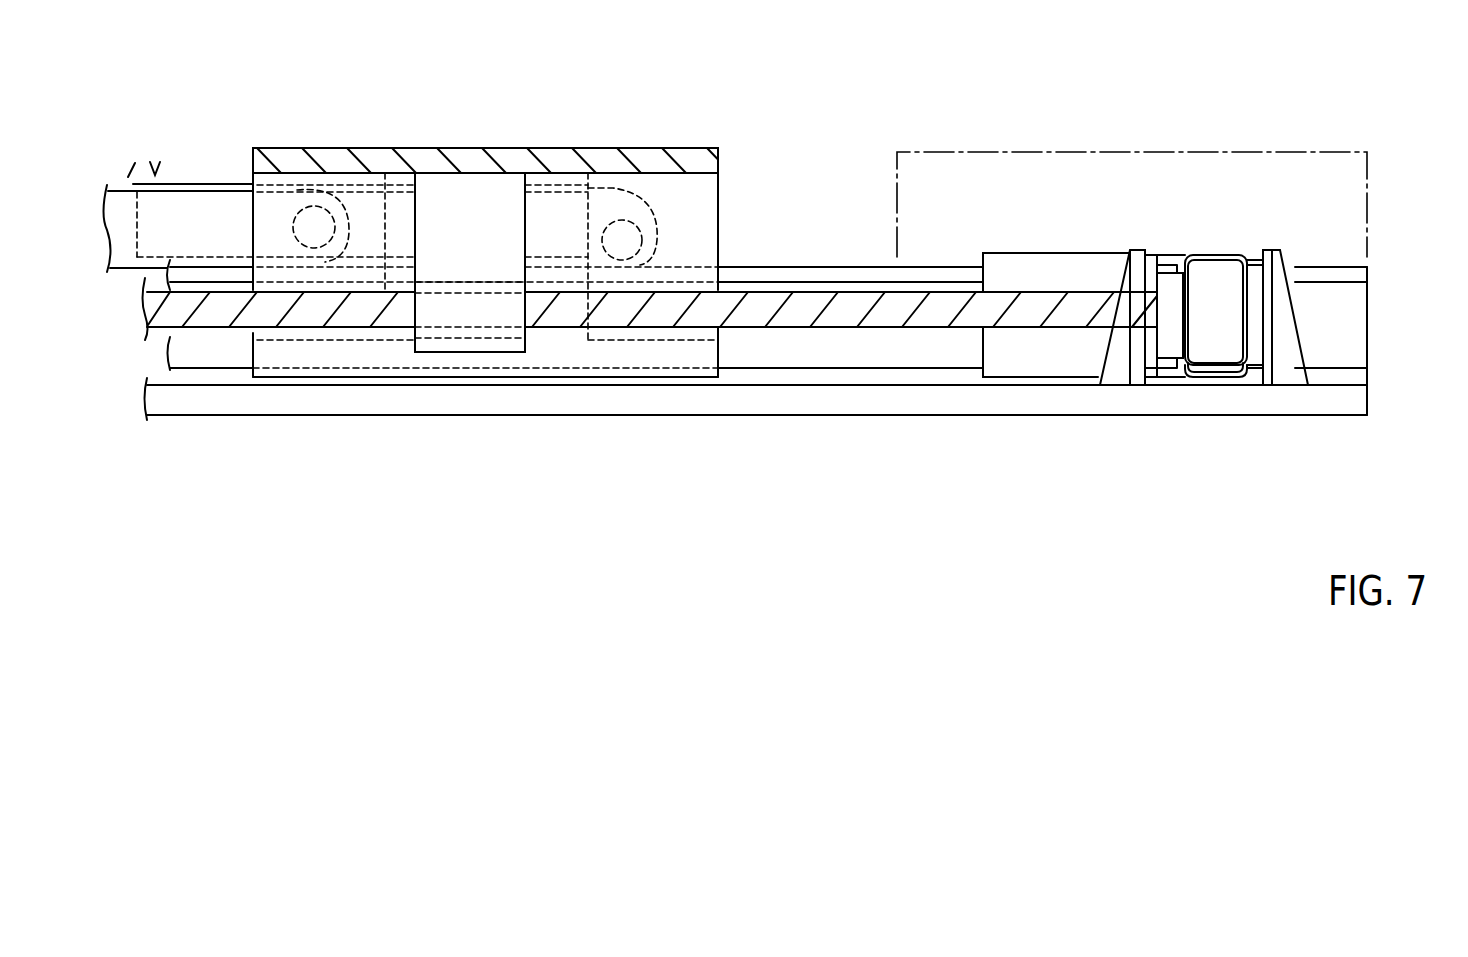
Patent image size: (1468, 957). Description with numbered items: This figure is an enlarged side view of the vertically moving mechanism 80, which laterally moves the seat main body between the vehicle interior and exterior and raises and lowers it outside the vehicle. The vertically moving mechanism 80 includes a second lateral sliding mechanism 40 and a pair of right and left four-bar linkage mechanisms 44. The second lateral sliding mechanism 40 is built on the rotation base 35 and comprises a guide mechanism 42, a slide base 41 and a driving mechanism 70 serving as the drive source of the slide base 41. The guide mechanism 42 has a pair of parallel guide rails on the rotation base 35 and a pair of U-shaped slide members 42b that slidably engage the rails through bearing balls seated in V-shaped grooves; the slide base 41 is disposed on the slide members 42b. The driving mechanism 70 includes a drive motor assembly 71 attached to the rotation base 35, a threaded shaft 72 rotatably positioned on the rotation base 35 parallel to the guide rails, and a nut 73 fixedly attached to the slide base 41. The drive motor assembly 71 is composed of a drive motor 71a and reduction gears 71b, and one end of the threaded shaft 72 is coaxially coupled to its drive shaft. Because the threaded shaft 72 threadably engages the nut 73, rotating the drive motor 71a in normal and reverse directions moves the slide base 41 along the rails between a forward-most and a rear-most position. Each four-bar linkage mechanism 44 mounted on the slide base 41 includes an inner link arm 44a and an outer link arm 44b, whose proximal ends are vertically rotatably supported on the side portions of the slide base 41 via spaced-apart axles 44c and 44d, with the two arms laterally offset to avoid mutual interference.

The four-bar linkage mechanism 44 is at (177, 160).
The inner link arm 44a is at (226, 205).
The outer link arm 44b is at (198, 183).
The axle 44c is at (313, 227).
The axle 44d is at (623, 240).
The slide member 42b is at (392, 213).
The guide mechanism 42 is at (795, 273).
The vertically moving mechanism 80 is at (425, 132).
The slide base 41 is at (685, 148).
The second lateral sliding mechanism 40 is at (817, 121).
The nut 73 is at (477, 333).
The rotation base 35 is at (802, 398).
The threaded shaft 72 is at (892, 315).
The drive motor 71a is at (1043, 360).
The drive motor assembly 71 is at (1162, 388).
The reduction gears 71b is at (1217, 355).
The driving mechanism 70 is at (1234, 236).